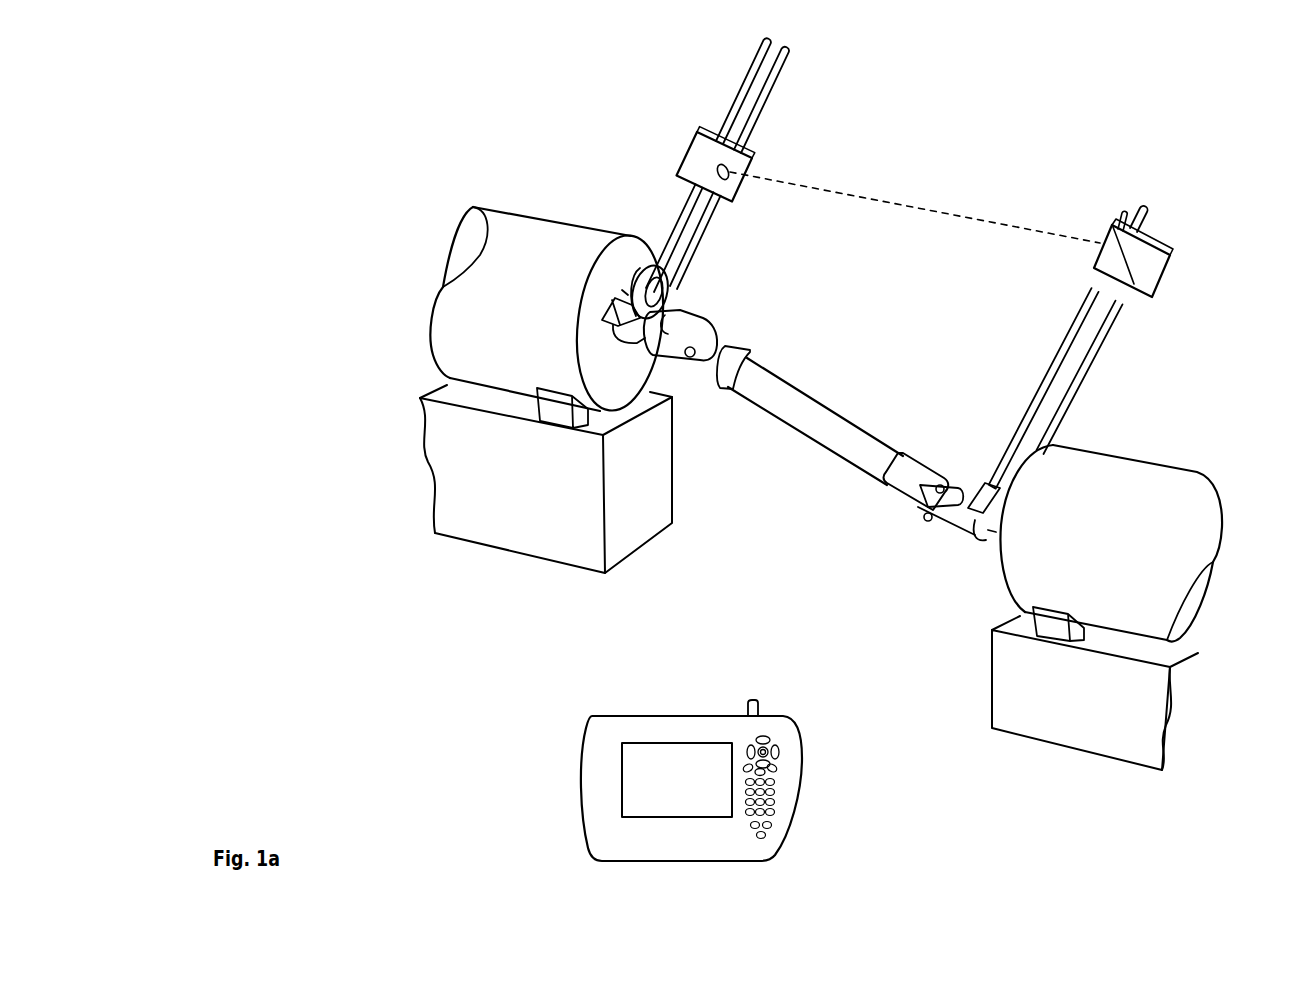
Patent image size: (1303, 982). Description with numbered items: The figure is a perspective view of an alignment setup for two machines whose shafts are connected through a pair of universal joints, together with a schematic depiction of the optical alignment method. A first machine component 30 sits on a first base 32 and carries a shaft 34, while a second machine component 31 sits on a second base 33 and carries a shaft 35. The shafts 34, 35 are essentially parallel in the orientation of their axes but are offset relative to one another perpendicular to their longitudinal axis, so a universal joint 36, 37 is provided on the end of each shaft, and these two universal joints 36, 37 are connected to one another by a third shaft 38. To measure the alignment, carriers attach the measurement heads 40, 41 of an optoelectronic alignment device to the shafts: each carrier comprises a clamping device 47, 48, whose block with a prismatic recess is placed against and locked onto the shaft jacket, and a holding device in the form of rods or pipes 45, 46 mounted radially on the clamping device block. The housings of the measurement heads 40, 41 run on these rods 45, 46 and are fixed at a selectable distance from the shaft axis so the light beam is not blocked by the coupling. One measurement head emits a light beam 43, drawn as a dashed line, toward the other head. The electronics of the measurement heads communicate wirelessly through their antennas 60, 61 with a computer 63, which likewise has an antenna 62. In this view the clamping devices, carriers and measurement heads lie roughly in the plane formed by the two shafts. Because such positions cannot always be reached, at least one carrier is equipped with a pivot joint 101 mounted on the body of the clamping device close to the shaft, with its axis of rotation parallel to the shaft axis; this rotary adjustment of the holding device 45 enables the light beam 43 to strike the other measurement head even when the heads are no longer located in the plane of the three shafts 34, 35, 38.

The first machine component 30 is at (553, 218).
The second machine component 31 is at (1140, 473).
The first base 32 is at (482, 468).
The second base 33 is at (1068, 706).
The shaft 34 is at (640, 340).
The shaft 35 is at (992, 530).
The universal joint 36 is at (665, 338).
The universal joint 37 is at (970, 480).
The third shaft 38 is at (857, 452).
The measurement head 40 is at (752, 158).
The measurement head 41 is at (1108, 242).
The light beam 43 is at (893, 197).
The rod 45 is at (723, 120).
The rod 46 is at (1157, 225).
The clamping device 47 is at (993, 492).
The clamping device 48 is at (622, 305).
The antenna 60 is at (747, 143).
The antenna 61 is at (1123, 213).
The antenna 62 is at (747, 708).
The computer 63 is at (648, 732).
The pivot joint 101 is at (640, 280).